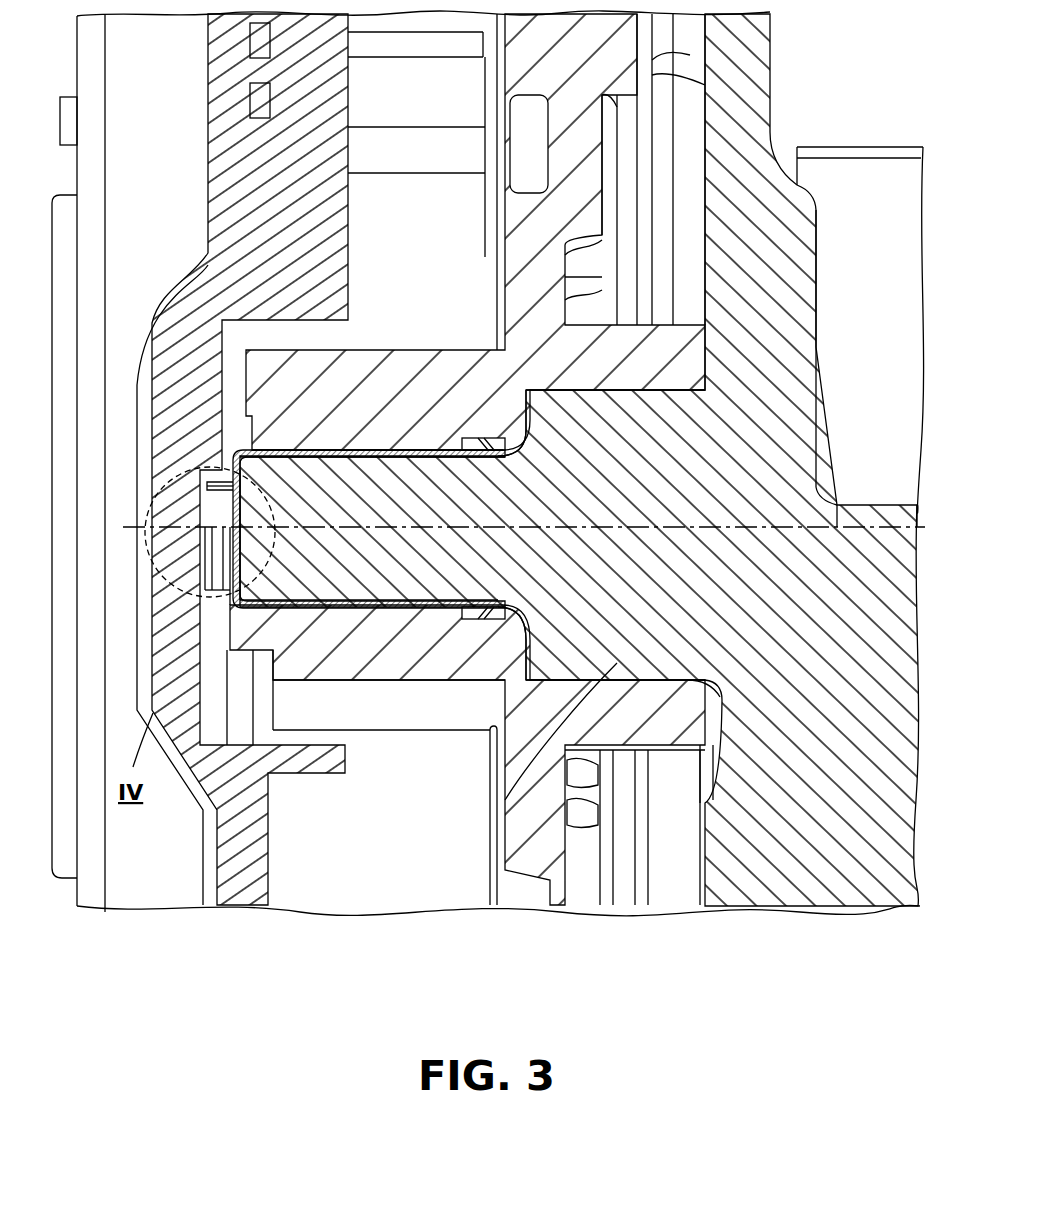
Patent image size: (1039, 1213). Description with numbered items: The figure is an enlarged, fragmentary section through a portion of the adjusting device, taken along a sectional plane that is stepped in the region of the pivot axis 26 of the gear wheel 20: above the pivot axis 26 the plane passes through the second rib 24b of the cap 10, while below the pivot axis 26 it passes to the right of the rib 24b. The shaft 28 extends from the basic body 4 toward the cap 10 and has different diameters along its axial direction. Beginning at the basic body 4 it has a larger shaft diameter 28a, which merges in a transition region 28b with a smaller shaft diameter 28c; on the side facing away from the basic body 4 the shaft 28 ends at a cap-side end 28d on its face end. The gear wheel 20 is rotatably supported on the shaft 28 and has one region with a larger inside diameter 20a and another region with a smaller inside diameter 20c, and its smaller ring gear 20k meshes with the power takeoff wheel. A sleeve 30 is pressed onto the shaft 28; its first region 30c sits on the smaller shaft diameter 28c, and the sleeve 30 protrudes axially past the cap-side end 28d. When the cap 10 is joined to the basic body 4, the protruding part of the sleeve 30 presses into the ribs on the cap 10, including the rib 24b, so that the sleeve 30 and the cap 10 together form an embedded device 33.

The basic body 4 is at (848, 900).
The cap 10 is at (243, 905).
The gear wheel 20 is at (580, 900).
The larger inside diameter 20a is at (655, 392).
The smaller inside diameter 20c is at (400, 450).
The smaller ring gear 20k is at (423, 717).
The second rib 24b is at (210, 470).
The pivot axis 26 is at (582, 525).
The shaft 28 is at (579, 460).
The larger shaft diameter 28a is at (613, 663).
The transition region 28b is at (520, 437).
The smaller shaft diameter 28c is at (350, 585).
The cap-side end 28d is at (247, 512).
The sleeve 30 is at (365, 452).
The first region of the sleeve 30c is at (333, 457).
The embedded device 33 is at (213, 517).